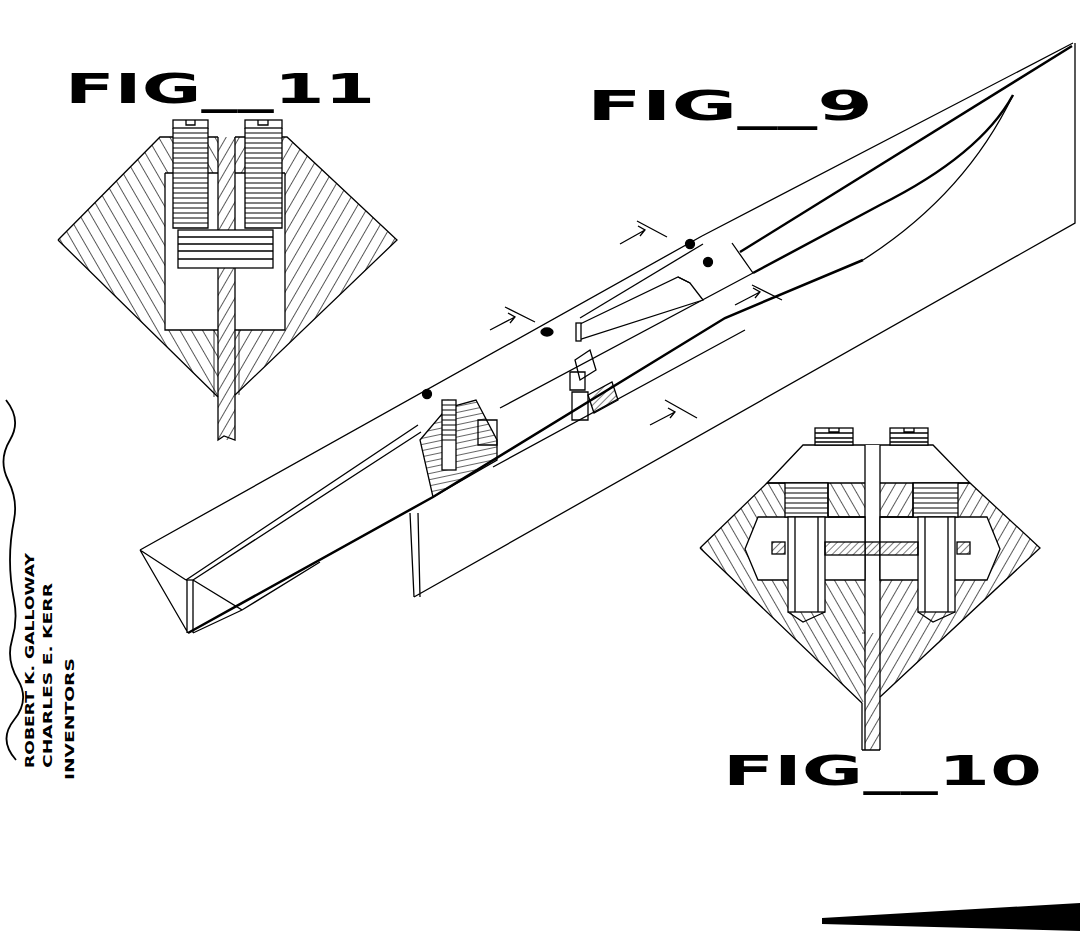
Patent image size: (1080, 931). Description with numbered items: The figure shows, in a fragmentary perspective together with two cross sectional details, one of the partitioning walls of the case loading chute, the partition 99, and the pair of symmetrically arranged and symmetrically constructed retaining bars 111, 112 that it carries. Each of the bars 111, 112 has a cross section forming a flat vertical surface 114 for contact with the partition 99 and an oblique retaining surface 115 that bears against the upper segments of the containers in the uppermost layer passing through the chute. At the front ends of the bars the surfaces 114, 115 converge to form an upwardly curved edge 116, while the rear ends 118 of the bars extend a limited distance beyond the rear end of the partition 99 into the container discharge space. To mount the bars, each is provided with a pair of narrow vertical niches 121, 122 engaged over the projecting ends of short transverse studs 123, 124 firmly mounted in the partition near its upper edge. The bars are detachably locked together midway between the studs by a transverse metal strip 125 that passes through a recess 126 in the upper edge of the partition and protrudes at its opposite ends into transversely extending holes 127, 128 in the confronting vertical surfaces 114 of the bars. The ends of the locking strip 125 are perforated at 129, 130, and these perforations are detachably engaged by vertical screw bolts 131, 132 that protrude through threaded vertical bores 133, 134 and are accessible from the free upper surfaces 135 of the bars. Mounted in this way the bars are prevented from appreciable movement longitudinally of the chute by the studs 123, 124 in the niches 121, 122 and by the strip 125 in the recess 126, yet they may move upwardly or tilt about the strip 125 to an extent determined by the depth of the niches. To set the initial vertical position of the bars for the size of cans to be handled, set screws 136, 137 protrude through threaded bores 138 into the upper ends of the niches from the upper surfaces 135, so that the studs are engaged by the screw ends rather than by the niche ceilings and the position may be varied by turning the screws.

In FIG. 11, the partition 99 is at (232, 424).
In FIG. 10, the partition 99 is at (878, 733).
In FIG. 9, the partition 99 is at (582, 490).
In FIG. 11, the retaining bar 111 is at (126, 316).
In FIG. 10, the retaining bar 111 is at (808, 660).
In FIG. 9, the retaining bar 111 is at (205, 520).
In FIG. 11, the retaining bar 112 is at (315, 325).
In FIG. 10, the retaining bar 112 is at (954, 642).
In FIG. 9, the retaining bar 112 is at (327, 570).
In FIG. 11, the flat vertical surface 114 is at (215, 343).
In FIG. 10, the flat vertical surface 114 is at (882, 687).
In FIG. 9, the flat vertical surface 114 is at (198, 640).
In FIG. 11, the oblique retaining surface 115 is at (168, 348).
In FIG. 10, the oblique retaining surface 115 is at (771, 618).
In FIG. 9, the oblique retaining surface 115 is at (165, 593).
In FIG. 9, the upwardly curved edge 116 is at (853, 158).
In FIG. 9, the rear end 118 is at (160, 545).
In FIG. 10, the vertical niche 121 is at (871, 569).
In FIG. 9, the vertical niche 121 is at (452, 472).
In FIG. 11, the vertical niche 122 is at (179, 301).
In FIG. 9, the transverse stud 123 is at (496, 432).
In FIG. 11, the transverse stud 124 is at (250, 250).
In FIG. 10, the transverse metal strip 125 is at (843, 556).
In FIG. 9, the transverse metal strip 125 is at (598, 402).
In FIG. 10, the recess 126 is at (872, 492).
In FIG. 9, the recess 126 is at (588, 332).
In FIG. 10, the transversely extending hole 127 is at (772, 555).
In FIG. 10, the transversely extending hole 128 is at (970, 555).
In FIG. 9, the transversely extending hole 128 is at (570, 381).
In FIG. 10, the perforation 129 is at (822, 531).
In FIG. 10, the perforation 130 is at (920, 531).
In FIG. 9, the perforation 130 is at (572, 402).
In FIG. 10, the vertical screw bolt 131 is at (797, 488).
In FIG. 9, the vertical screw bolt 131 is at (548, 328).
In FIG. 10, the vertical screw bolt 132 is at (948, 490).
In FIG. 9, the vertical screw bolt 132 is at (578, 422).
In FIG. 10, the threaded vertical bore 133 is at (785, 498).
In FIG. 10, the threaded vertical bore 134 is at (960, 500).
In FIG. 10, the free upper surface 135 is at (841, 480).
In FIG. 9, the free upper surface 135 is at (635, 284).
In FIG. 9, the set screw 136 is at (423, 393).
In FIG. 11, the set screw 137 is at (172, 126).
In FIG. 10, the set screw 137 is at (826, 428).
In FIG. 9, the set screw 137 is at (690, 240).
In FIG. 11, the threaded bore 138 is at (173, 157).